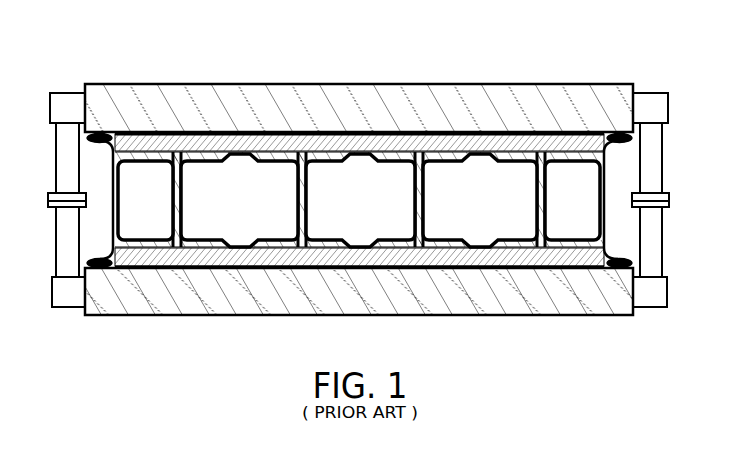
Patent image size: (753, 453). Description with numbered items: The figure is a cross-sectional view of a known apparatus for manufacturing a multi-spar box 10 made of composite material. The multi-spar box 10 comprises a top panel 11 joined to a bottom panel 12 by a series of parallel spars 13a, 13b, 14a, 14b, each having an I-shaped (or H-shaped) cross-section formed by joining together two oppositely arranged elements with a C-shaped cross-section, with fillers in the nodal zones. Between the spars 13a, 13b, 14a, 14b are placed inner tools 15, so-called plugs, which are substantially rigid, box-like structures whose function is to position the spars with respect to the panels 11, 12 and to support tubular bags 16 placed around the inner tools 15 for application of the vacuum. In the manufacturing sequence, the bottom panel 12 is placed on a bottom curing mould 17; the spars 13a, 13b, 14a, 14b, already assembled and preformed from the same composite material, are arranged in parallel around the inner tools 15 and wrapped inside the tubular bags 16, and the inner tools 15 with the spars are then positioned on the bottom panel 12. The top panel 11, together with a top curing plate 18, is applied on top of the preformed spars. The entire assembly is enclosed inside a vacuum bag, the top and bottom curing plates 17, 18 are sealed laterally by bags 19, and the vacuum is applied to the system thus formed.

The multi-spar box 10 is at (66, 123).
The top panel 11 is at (402, 112).
The bottom panel 12 is at (365, 317).
The spar 13a is at (92, 270).
The spar 13b is at (612, 268).
The spar 14a is at (196, 268).
The spar 14b is at (424, 268).
The inner tool 15 is at (278, 142).
The tubular bag 16 is at (205, 150).
The bottom curing mould 17 is at (276, 318).
The top curing plate 18 is at (458, 130).
The bag 19 is at (67, 308).